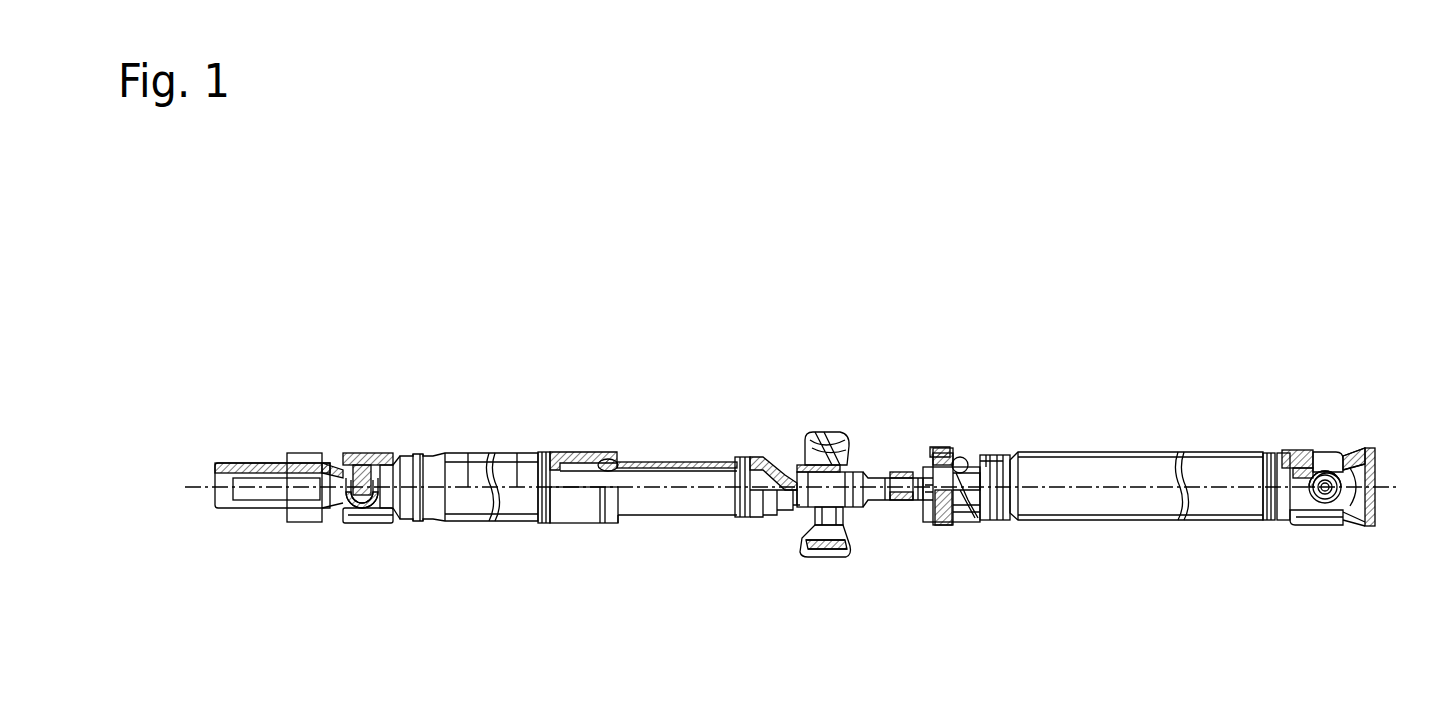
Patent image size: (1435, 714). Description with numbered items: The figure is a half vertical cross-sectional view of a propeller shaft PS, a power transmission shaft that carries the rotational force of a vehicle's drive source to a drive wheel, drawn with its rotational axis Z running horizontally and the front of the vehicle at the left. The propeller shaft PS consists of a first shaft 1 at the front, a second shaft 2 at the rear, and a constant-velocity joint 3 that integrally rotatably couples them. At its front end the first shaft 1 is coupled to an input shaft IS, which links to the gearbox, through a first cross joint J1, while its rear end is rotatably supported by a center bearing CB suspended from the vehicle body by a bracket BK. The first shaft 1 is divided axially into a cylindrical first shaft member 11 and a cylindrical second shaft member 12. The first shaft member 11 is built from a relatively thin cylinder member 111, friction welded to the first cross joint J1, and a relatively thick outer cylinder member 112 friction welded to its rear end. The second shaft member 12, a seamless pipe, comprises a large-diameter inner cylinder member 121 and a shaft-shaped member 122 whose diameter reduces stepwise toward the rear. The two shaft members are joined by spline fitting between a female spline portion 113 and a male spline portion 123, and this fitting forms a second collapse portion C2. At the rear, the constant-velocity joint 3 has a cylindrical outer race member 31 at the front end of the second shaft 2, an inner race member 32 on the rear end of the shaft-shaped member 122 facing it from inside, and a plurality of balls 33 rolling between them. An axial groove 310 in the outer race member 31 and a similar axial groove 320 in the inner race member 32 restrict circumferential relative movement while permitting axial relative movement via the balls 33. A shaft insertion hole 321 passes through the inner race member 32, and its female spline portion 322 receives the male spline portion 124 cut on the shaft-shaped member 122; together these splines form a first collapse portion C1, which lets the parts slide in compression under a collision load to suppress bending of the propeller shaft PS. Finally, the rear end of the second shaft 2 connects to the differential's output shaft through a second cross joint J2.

The first shaft 1 is at (600, 469).
The second shaft 2 is at (1128, 532).
The constant-velocity joint 3 is at (988, 479).
The first shaft member 11 is at (483, 423).
The second shaft member 12 is at (750, 420).
The cylinder member 111 is at (514, 453).
The outer cylinder member 112 is at (566, 455).
The female spline portion 113 is at (644, 458).
The inner cylinder member 121 is at (700, 460).
The shaft-shaped member 122 is at (790, 458).
The male spline portion 123 is at (588, 452).
The male spline portion 124 is at (947, 475).
The outer race member 31 is at (978, 460).
The inner race member 32 is at (938, 450).
The balls 33 is at (958, 458).
The axial groove 310 is at (996, 465).
The axial groove 320 is at (988, 482).
The shaft insertion hole 321 is at (922, 540).
The female spline portion 322 is at (946, 488).
The first collapse portion C1 is at (1000, 592).
The second collapse portion C2 is at (643, 423).
The center bearing CB is at (806, 455).
The bracket BK is at (822, 432).
The input shaft IS is at (262, 468).
The propeller shaft PS is at (1322, 420).
The first cross joint J1 is at (336, 450).
The second cross joint J2 is at (1354, 452).
The rotational axis Z is at (1392, 476).